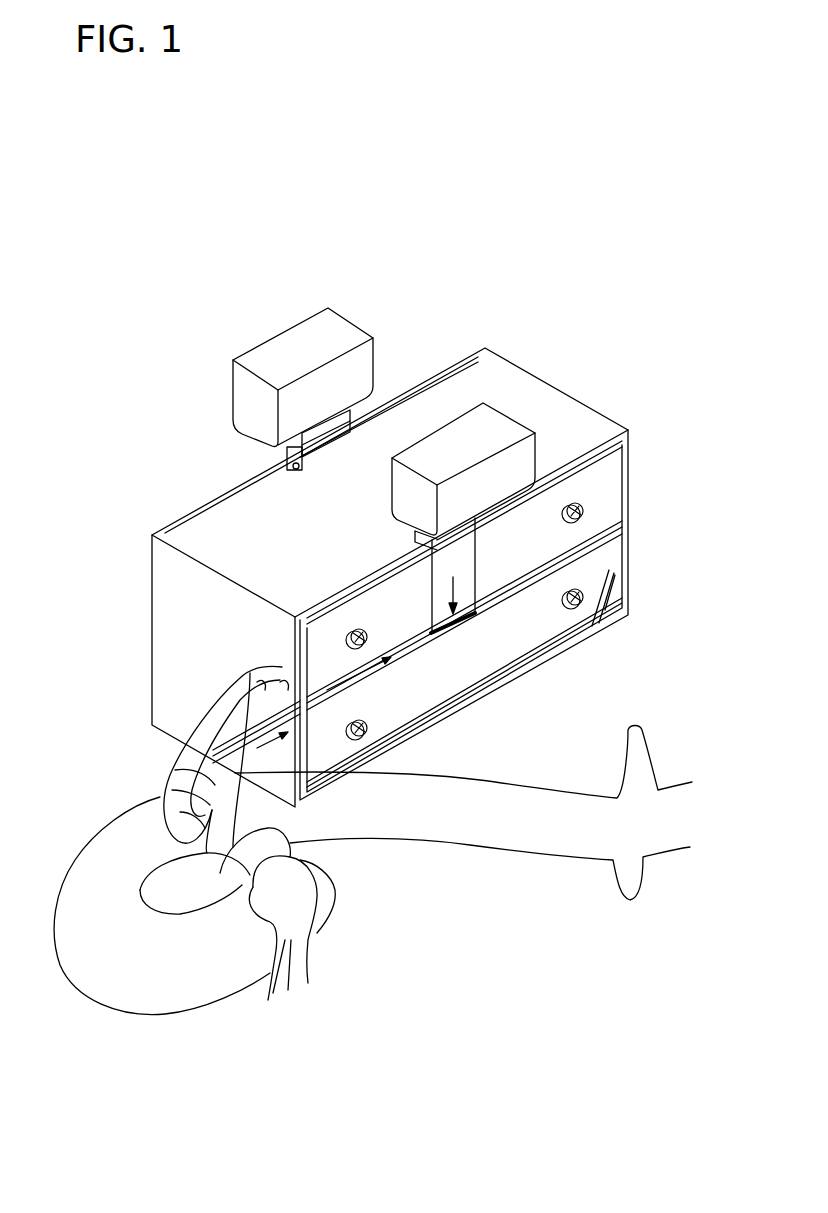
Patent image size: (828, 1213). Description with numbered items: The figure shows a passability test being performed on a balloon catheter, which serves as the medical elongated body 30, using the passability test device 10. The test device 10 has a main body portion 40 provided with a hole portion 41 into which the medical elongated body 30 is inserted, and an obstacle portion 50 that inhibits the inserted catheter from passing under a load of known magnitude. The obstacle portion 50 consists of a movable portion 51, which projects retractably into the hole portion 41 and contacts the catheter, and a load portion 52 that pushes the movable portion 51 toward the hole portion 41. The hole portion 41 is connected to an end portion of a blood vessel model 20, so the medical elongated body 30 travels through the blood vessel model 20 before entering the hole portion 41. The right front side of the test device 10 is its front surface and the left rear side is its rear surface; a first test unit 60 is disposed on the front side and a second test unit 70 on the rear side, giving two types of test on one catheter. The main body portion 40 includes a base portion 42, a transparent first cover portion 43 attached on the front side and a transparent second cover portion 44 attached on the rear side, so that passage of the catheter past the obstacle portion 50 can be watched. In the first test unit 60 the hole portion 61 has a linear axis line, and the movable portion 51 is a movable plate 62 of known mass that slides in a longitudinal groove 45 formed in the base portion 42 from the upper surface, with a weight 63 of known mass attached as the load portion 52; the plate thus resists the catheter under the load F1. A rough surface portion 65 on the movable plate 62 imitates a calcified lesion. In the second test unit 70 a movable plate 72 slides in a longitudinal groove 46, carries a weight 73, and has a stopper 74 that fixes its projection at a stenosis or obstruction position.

The passability test device 10 is at (110, 244).
The blood vessel model 20 is at (207, 998).
The medical elongated body 30 is at (374, 670).
The main body portion 40 is at (148, 598).
The hole portion 41 is at (453, 697).
The base portion 42 is at (218, 600).
The first cover portion 43 is at (330, 613).
The second cover portion 44 is at (172, 519).
The longitudinal groove 45 is at (432, 588).
The longitudinal groove 46 is at (293, 466).
The obstacle portion 50 is at (432, 258).
The movable portion 51 is at (411, 322).
The load portion 52 is at (379, 304).
The first test unit 60 is at (631, 444).
The hole portion 61 is at (418, 647).
The movable plate 62 is at (478, 521).
The weight 63 is at (499, 433).
The rough surface portion 65 is at (462, 624).
The second test unit 70 is at (463, 350).
The movable plate 72 is at (380, 397).
The weight 73 is at (332, 337).
The stopper 74 is at (340, 443).
The load F1 is at (460, 587).